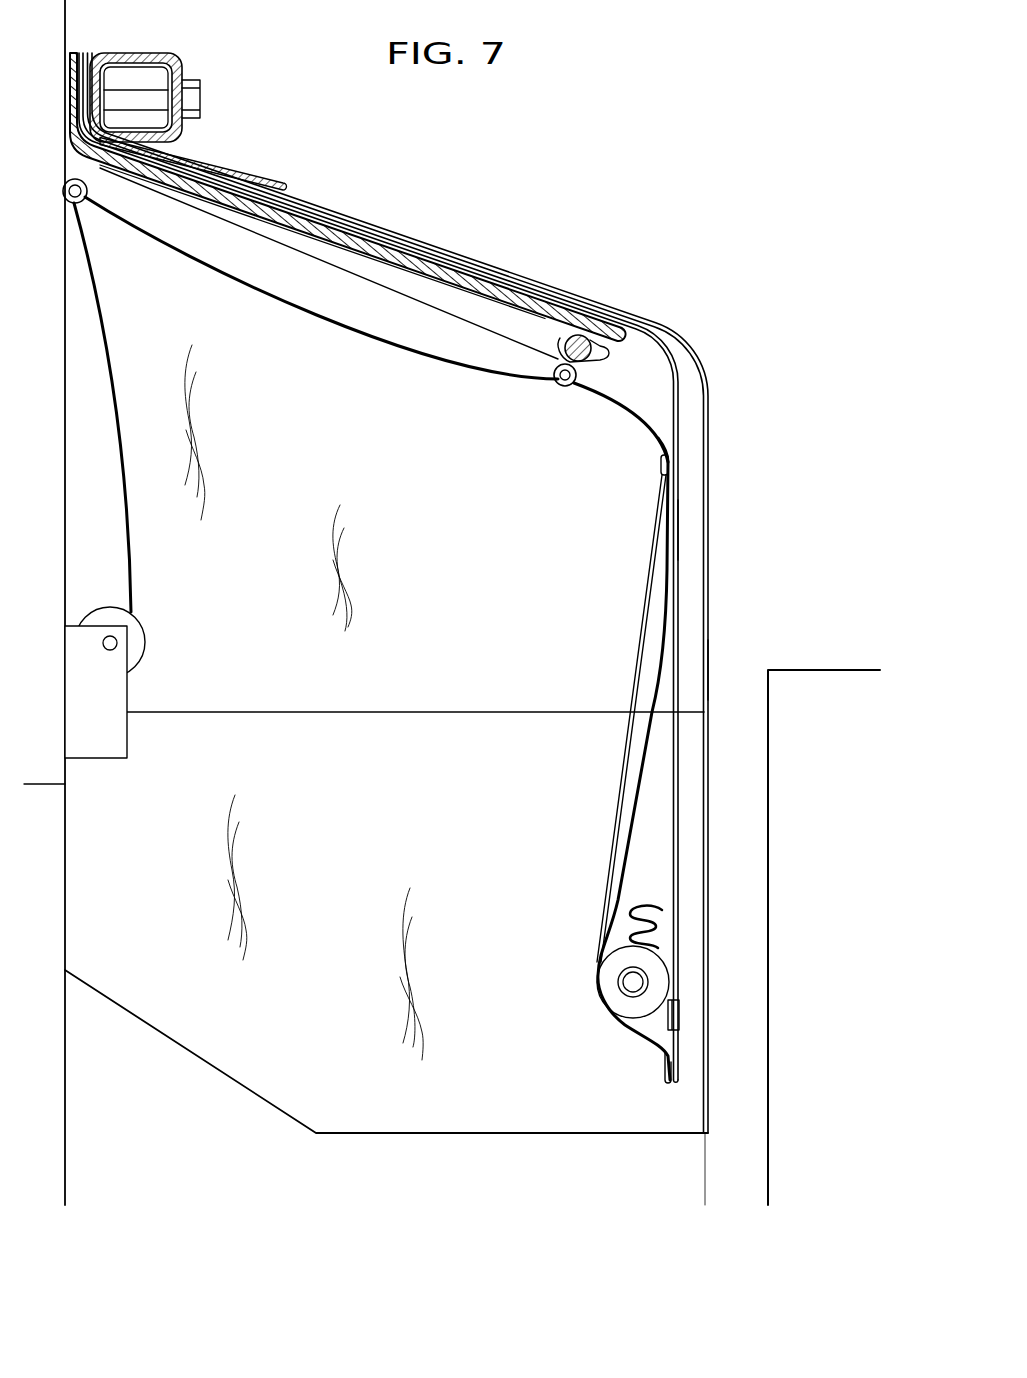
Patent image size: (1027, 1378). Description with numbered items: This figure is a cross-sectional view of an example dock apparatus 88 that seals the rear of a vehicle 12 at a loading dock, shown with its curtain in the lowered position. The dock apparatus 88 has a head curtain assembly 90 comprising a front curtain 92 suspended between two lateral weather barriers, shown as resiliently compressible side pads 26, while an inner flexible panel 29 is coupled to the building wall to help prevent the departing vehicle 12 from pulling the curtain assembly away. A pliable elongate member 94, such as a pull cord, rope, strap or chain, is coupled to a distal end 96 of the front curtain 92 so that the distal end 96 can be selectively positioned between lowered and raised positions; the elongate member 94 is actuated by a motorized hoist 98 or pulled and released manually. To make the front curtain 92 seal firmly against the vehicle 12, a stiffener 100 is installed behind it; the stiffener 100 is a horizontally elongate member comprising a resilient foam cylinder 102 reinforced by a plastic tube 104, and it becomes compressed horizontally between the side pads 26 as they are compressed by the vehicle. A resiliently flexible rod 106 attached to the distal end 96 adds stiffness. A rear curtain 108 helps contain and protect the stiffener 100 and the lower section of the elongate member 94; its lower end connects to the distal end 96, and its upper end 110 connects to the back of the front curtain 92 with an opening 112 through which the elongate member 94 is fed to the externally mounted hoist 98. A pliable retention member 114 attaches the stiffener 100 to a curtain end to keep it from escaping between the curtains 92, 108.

The vehicle 12 is at (818, 668).
The side pads 26 is at (477, 318).
The inner flexible panel 29 is at (268, 710).
The dock apparatus 88 is at (714, 217).
The head curtain assembly 90 is at (462, 518).
The front curtain 92 is at (680, 628).
The pliable elongate member 94 is at (395, 340).
The distal end 96 is at (686, 1073).
The motorized hoist 98 is at (132, 735).
The stiffener 100 is at (606, 968).
The resilient foam cylinder 102 is at (613, 1010).
The plastic tube 104 is at (633, 998).
The resiliently flexible rod 106 is at (668, 1012).
The rear curtain 108 is at (637, 654).
The upper end 110 is at (661, 462).
The opening 112 is at (658, 440).
The pliable retention member 114 is at (645, 905).